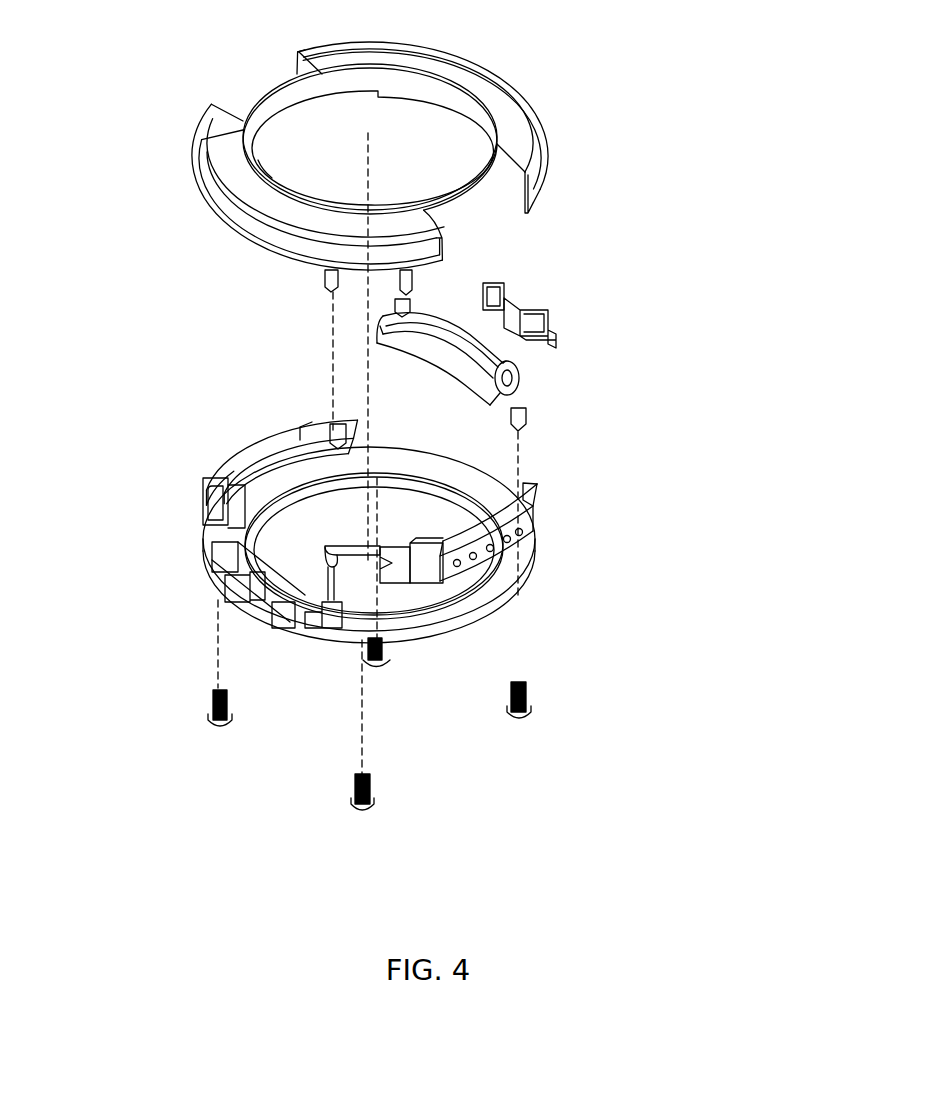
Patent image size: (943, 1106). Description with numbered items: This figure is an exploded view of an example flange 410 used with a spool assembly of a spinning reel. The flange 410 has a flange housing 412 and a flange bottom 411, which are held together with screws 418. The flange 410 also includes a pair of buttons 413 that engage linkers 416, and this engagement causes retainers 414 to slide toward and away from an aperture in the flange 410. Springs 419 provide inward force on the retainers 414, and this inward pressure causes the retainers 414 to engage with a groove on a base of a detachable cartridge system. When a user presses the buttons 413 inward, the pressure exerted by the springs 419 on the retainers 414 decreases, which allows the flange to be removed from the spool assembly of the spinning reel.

The flange 410 is at (148, 60).
The flange bottom 411 is at (538, 538).
The flange housing 412 is at (547, 152).
The buttons 413 is at (230, 450).
The retainers 414 is at (222, 551).
The linkers 416 is at (523, 411).
The screws 418 is at (538, 710).
The springs 419 is at (557, 326).